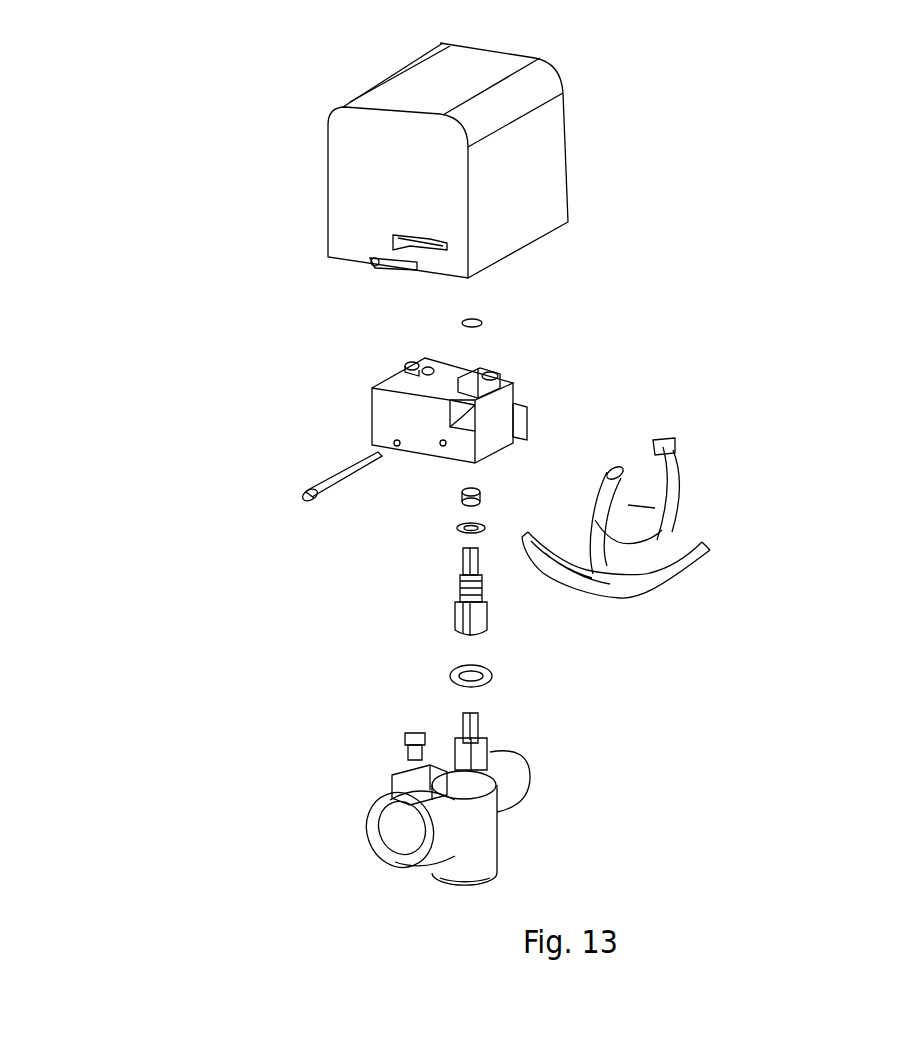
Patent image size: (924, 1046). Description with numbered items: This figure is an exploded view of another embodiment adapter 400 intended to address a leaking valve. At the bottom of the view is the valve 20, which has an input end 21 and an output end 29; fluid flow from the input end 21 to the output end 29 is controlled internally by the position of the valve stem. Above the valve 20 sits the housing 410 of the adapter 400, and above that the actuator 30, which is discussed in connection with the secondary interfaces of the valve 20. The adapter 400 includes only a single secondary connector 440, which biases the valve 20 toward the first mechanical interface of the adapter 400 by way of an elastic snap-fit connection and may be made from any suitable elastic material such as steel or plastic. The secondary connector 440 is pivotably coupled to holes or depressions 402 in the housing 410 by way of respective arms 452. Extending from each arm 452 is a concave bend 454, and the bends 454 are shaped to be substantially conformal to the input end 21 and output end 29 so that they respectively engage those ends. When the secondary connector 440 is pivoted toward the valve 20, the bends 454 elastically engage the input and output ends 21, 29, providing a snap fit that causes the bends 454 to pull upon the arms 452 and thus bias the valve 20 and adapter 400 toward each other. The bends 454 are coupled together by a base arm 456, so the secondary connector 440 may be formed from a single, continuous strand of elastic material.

The actuator 30 is at (375, 175).
The housing 410 is at (395, 413).
The holes or depressions 402 is at (441, 448).
The adapter 400 is at (265, 476).
The secondary connector 440 is at (721, 561).
The arms 452 is at (611, 468).
The concave bends 454 is at (592, 570).
The base arm 456 is at (679, 573).
The valve 20 is at (446, 809).
The input end 21 is at (392, 837).
The output end 29 is at (512, 757).